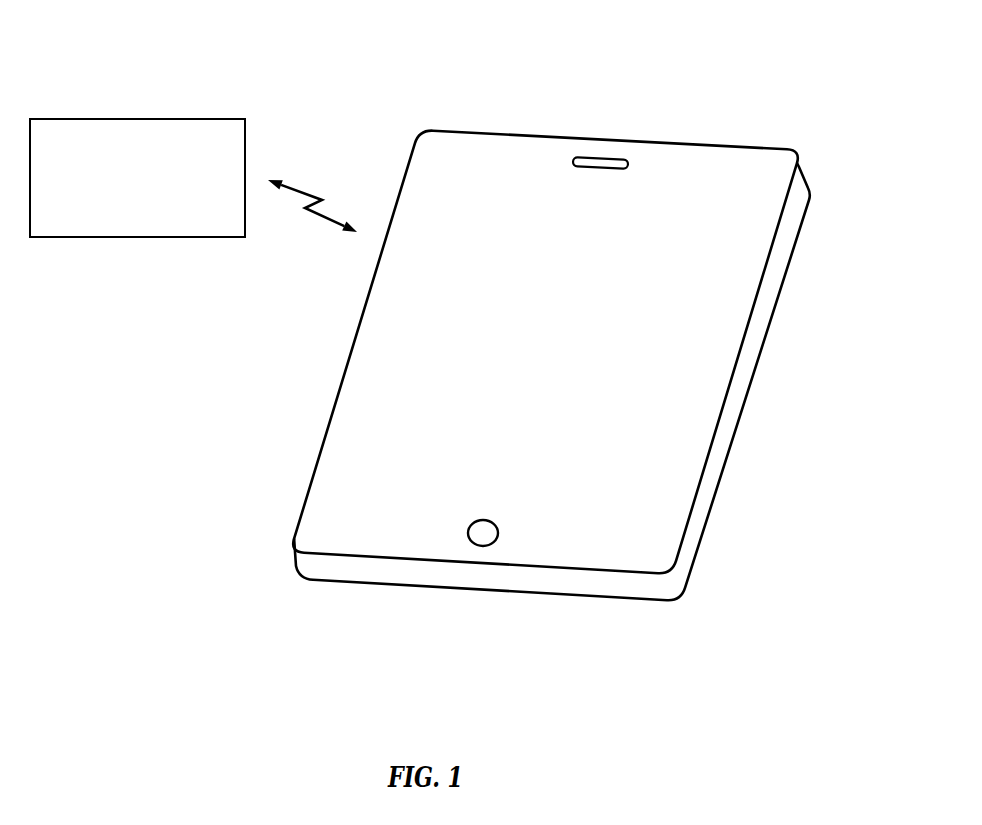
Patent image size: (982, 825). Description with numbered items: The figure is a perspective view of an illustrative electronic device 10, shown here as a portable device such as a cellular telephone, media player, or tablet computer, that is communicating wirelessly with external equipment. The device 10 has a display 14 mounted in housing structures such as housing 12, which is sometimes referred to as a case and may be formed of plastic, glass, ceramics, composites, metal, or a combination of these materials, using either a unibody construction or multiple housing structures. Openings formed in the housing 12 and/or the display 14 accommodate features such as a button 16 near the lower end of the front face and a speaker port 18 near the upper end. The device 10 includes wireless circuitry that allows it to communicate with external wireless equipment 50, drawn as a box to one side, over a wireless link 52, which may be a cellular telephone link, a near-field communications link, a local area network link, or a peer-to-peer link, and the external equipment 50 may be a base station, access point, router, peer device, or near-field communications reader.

The electronic device 10 is at (821, 90).
The housing 12 is at (717, 452).
The display 14 is at (708, 331).
The button 16 is at (483, 548).
The speaker port 18 is at (597, 158).
The external wireless equipment 50 is at (143, 237).
The wireless link 52 is at (307, 193).